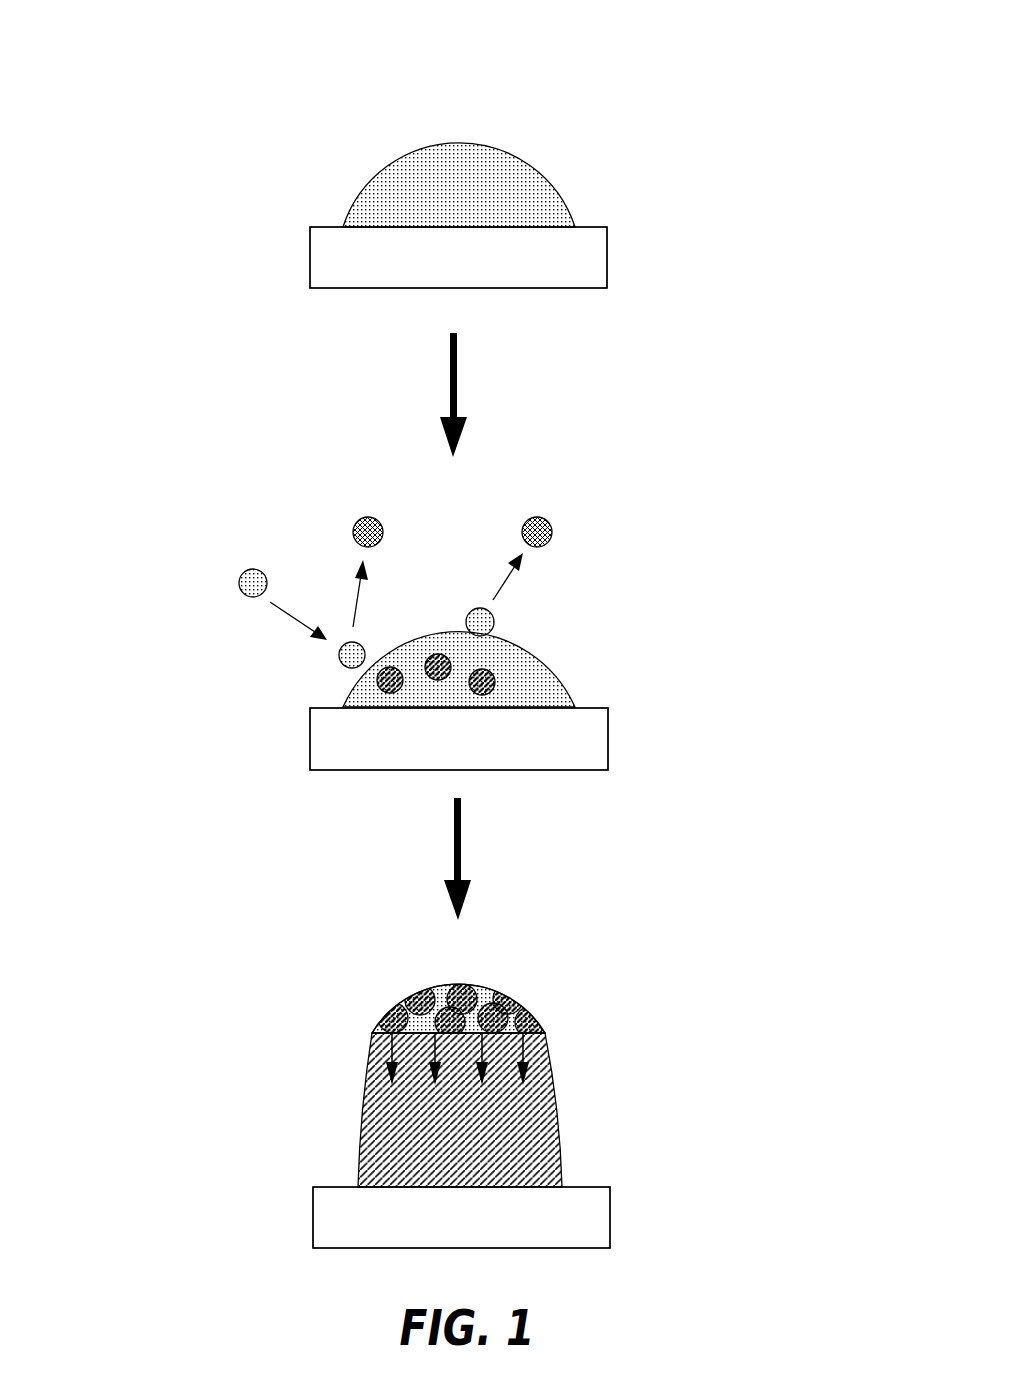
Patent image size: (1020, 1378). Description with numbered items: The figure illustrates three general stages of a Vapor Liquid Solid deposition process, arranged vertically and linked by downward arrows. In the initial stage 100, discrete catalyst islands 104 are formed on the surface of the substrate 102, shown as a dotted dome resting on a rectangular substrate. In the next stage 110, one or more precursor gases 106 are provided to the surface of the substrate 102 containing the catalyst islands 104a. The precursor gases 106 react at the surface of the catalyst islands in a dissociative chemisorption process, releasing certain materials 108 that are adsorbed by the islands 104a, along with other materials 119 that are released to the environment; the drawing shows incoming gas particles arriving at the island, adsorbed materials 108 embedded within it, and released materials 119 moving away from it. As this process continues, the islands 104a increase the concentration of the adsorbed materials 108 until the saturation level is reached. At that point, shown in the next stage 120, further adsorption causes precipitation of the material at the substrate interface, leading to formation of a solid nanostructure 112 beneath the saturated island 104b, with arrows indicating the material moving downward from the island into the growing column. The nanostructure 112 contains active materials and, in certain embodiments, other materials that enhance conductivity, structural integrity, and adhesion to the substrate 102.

The initial stage 100 is at (610, 84).
The substrate 102 is at (607, 254).
The catalyst islands 104 is at (503, 187).
The catalyst islands 104a is at (503, 667).
The solder bump top portion after reflow 104b is at (535, 1013).
The precursor gases 106 is at (238, 583).
The adsorbed materials 108 is at (378, 683).
The next stage 110 is at (617, 494).
The nanostructure 112 is at (515, 1125).
The other materials 119 is at (552, 532).
The next stage 120 is at (580, 962).